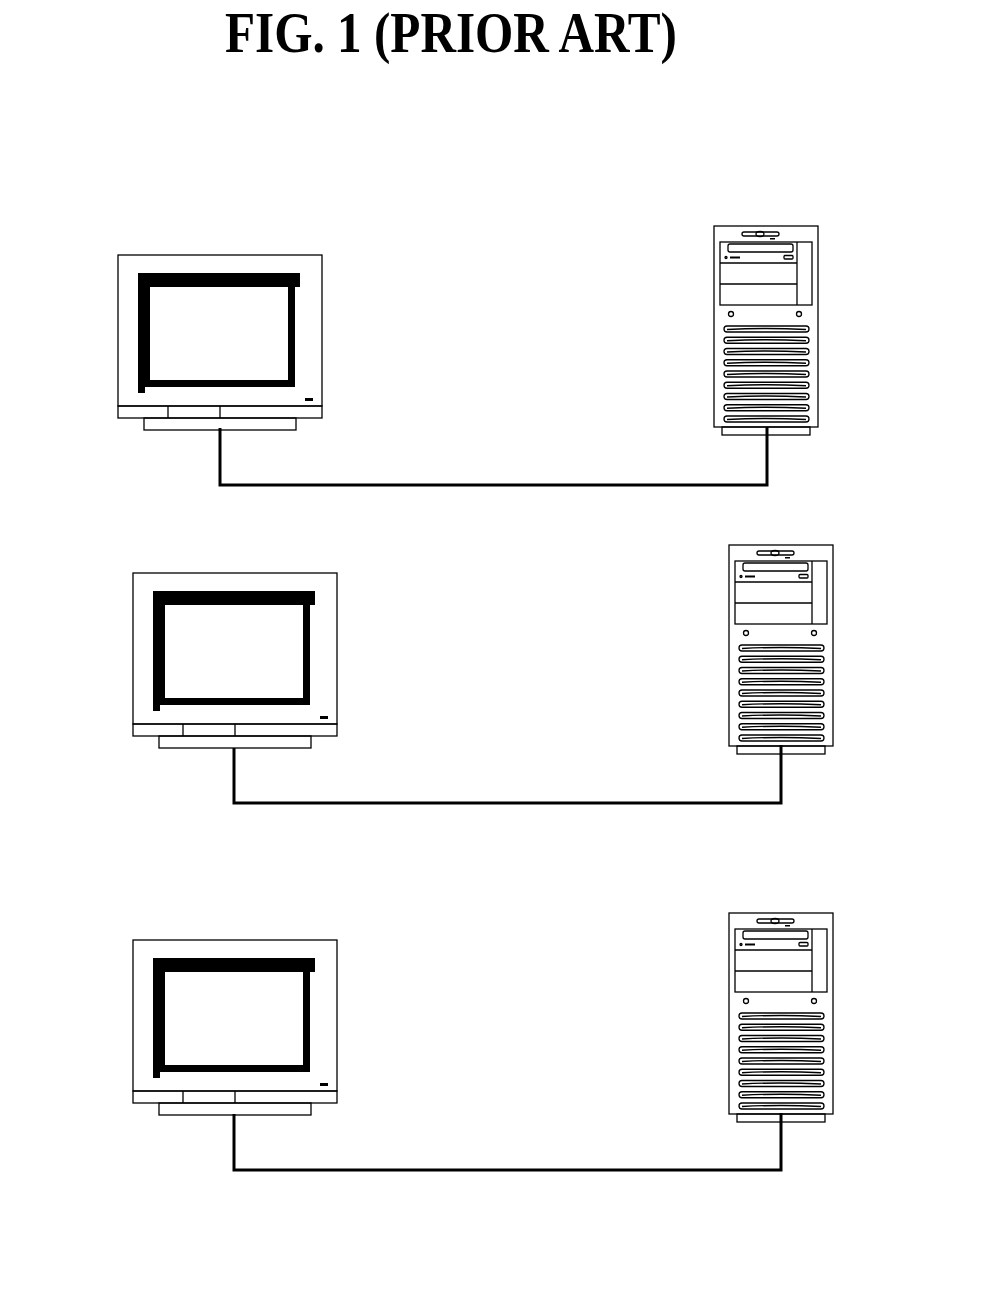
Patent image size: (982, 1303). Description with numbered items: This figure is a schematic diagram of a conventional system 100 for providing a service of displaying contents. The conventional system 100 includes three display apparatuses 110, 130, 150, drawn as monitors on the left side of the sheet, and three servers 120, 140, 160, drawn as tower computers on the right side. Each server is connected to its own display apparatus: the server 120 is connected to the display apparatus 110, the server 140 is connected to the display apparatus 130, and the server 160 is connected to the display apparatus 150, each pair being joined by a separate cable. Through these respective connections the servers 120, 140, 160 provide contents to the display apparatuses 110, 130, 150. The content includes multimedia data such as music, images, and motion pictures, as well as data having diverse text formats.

The conventional system 100 is at (45, 144).
The display apparatus 110 is at (217, 254).
The server 120 is at (767, 226).
The display apparatus 130 is at (235, 625).
The server 140 is at (791, 619).
The display apparatus 150 is at (235, 992).
The server 160 is at (791, 987).